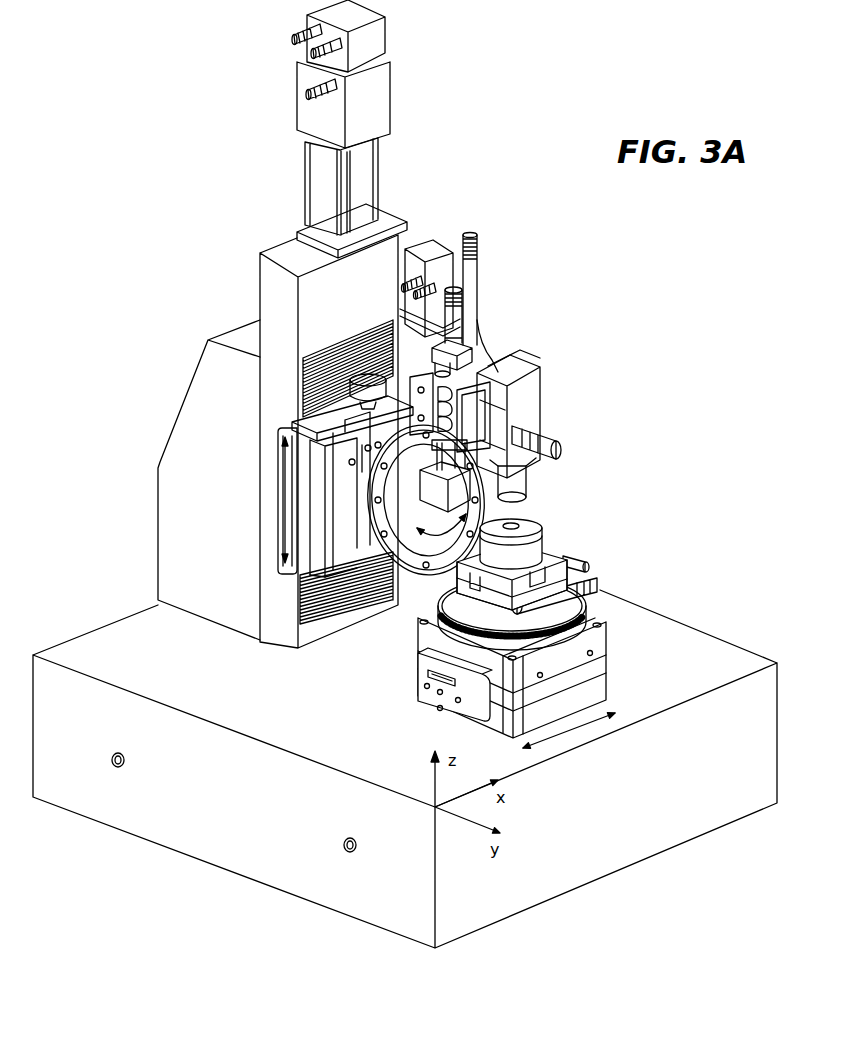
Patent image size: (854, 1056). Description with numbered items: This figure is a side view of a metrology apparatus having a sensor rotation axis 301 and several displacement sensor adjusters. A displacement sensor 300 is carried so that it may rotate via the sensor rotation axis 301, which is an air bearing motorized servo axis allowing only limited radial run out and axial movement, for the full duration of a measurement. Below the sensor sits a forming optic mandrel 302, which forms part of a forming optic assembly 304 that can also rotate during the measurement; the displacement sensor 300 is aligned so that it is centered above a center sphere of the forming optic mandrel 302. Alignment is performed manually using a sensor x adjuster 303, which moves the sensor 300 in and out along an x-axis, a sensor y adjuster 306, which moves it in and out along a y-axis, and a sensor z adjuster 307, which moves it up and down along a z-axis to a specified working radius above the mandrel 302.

The displacement sensor 300 is at (533, 410).
The sensor rotation axis 301 is at (410, 310).
The forming optic mandrel 302 is at (517, 526).
The sensor x adjuster 303 is at (340, 447).
The forming optic assembly 304 is at (533, 524).
The sensor y adjuster 306 is at (557, 433).
The sensor z adjuster 307 is at (458, 307).